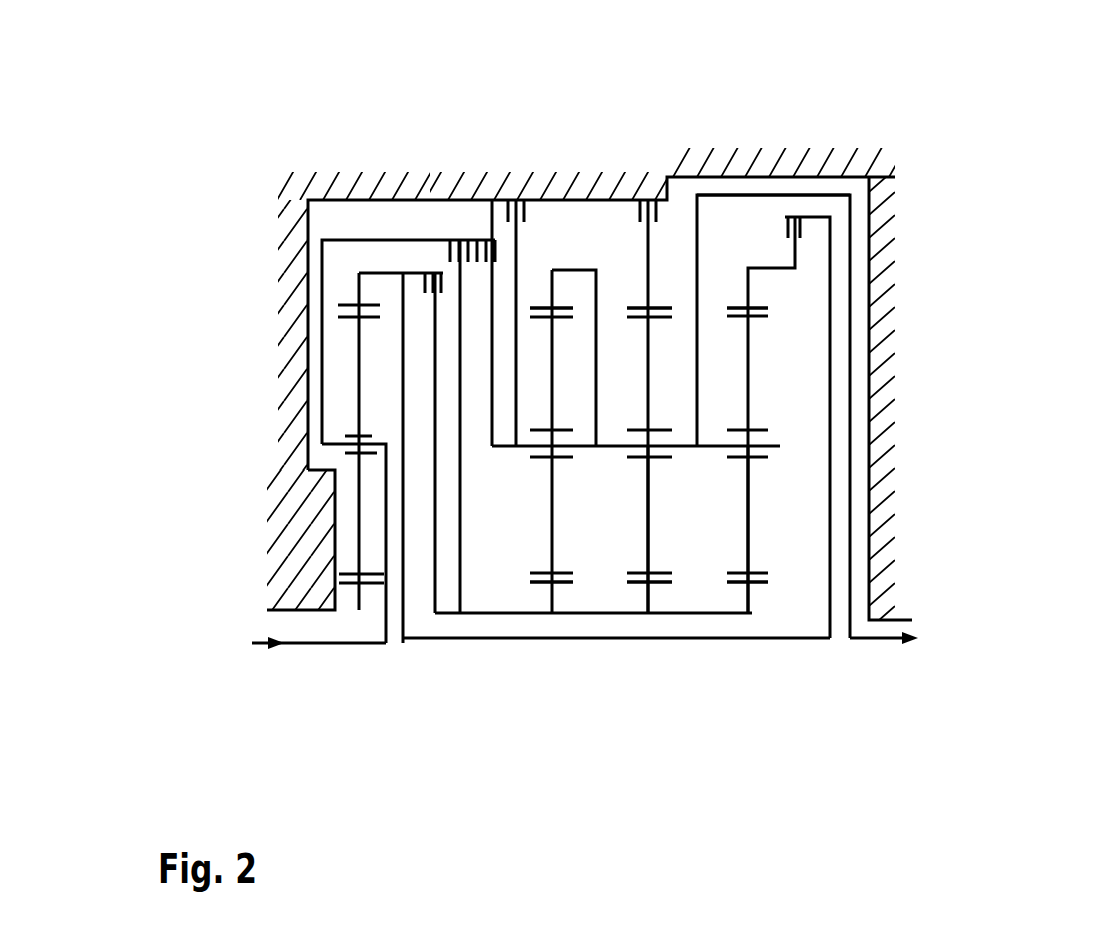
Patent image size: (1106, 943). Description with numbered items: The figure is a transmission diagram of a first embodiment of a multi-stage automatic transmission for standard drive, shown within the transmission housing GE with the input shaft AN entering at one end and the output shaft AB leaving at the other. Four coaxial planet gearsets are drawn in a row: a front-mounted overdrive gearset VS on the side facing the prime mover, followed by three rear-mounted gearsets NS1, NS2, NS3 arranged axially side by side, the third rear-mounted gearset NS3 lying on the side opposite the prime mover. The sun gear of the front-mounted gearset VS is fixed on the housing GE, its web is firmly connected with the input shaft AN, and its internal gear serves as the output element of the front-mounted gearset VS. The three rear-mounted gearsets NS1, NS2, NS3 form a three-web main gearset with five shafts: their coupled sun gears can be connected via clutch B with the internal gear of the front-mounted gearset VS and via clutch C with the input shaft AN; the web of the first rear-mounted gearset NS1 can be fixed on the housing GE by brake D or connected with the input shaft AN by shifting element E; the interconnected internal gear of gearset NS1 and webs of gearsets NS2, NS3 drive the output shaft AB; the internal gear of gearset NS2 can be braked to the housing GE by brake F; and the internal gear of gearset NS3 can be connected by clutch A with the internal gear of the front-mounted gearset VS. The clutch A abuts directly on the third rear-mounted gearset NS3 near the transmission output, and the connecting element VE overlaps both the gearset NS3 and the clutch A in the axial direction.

The transmission housing GE is at (577, 187).
The connecting element VE is at (810, 195).
The input shaft AN is at (321, 645).
The front-mounted gearset VS is at (360, 650).
The first shifting element A is at (789, 414).
The second shifting element B is at (424, 266).
The third shifting element C is at (452, 405).
The fourth shifting element D is at (530, 323).
The fifth shifting element E is at (483, 322).
The sixth shifting element F is at (631, 406).
The first rear-mounted gearset NS1 is at (552, 650).
The second rear-mounted gearset NS2 is at (650, 650).
The third rear-mounted gearset NS3 is at (750, 650).
The output shaft AB is at (875, 643).